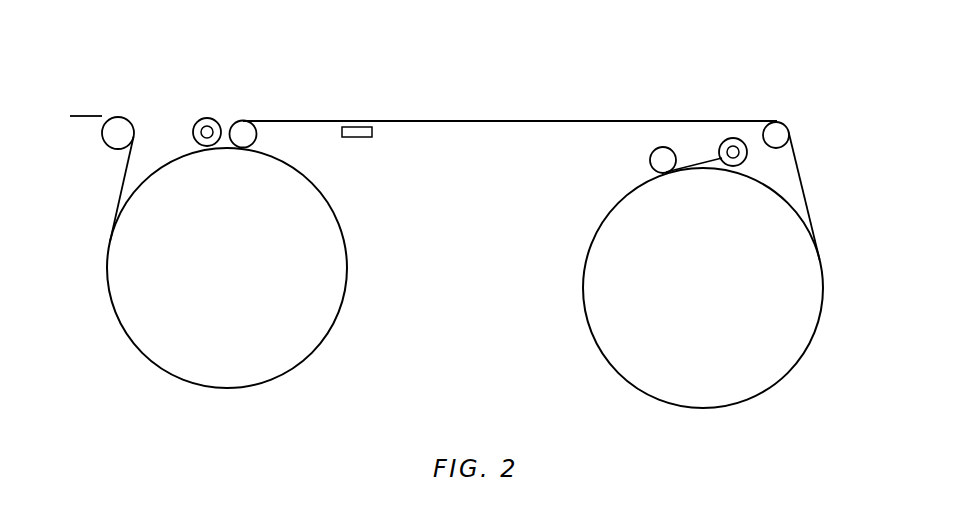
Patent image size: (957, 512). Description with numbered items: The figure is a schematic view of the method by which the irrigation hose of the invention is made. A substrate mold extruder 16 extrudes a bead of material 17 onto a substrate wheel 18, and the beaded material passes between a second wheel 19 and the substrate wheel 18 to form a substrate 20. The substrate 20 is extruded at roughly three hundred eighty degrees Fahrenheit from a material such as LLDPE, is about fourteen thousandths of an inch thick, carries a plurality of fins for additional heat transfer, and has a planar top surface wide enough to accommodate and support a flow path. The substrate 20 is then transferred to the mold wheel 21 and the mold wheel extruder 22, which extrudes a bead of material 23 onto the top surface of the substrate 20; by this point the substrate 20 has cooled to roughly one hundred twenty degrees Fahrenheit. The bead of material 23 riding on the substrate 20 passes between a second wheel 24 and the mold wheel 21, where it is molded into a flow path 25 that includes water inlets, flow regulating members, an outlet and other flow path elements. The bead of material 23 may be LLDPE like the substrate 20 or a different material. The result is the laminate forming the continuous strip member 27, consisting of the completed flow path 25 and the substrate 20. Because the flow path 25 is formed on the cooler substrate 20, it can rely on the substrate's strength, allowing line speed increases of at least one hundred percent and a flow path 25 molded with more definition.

The substrate mold extruder 16 is at (747, 155).
The bead of material 17 is at (704, 162).
The substrate wheel 18 is at (583, 278).
The second wheel 19 is at (650, 163).
The substrate 20 is at (825, 183).
The mold wheel 21 is at (348, 263).
The mold wheel extruder 22 is at (213, 118).
The bead of material 23 is at (227, 140).
The second wheel 24 is at (257, 135).
The flow path 25 is at (74, 168).
The continuous strip member 27 is at (104, 113).